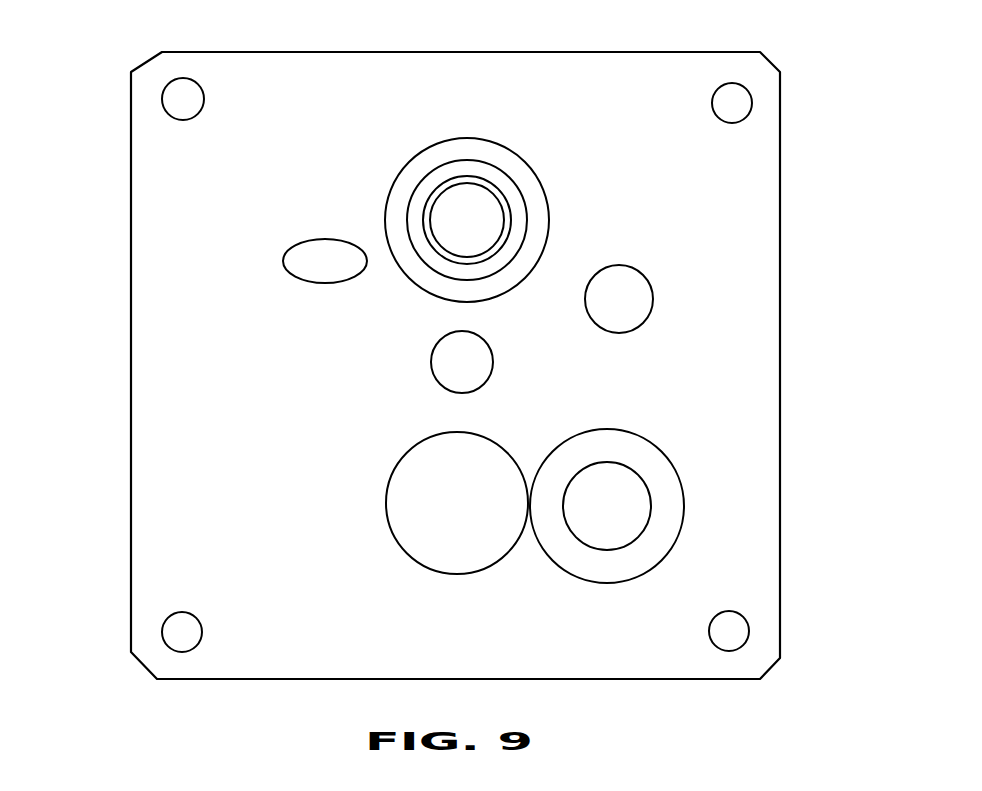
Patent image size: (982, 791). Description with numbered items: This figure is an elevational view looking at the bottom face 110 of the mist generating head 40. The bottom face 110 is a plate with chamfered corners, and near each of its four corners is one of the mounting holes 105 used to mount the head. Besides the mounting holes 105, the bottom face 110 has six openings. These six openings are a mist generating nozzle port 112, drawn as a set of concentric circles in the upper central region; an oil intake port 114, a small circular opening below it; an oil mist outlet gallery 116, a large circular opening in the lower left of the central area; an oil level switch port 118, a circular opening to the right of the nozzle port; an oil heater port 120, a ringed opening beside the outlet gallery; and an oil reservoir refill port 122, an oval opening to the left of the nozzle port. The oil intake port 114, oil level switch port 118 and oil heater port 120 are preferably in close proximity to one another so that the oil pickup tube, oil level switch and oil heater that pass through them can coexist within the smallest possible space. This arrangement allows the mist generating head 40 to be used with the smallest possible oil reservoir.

The mist generating head 40 is at (661, 29).
The mounting holes 105 is at (183, 95).
The bottom face 110 is at (758, 318).
The mist generating nozzle port 112 is at (485, 215).
The oil intake port 114 is at (470, 352).
The oil mist outlet gallery 116 is at (418, 463).
The oil level switch port 118 is at (632, 288).
The oil heater port 120 is at (632, 508).
The oil reservoir refill port 122 is at (312, 253).